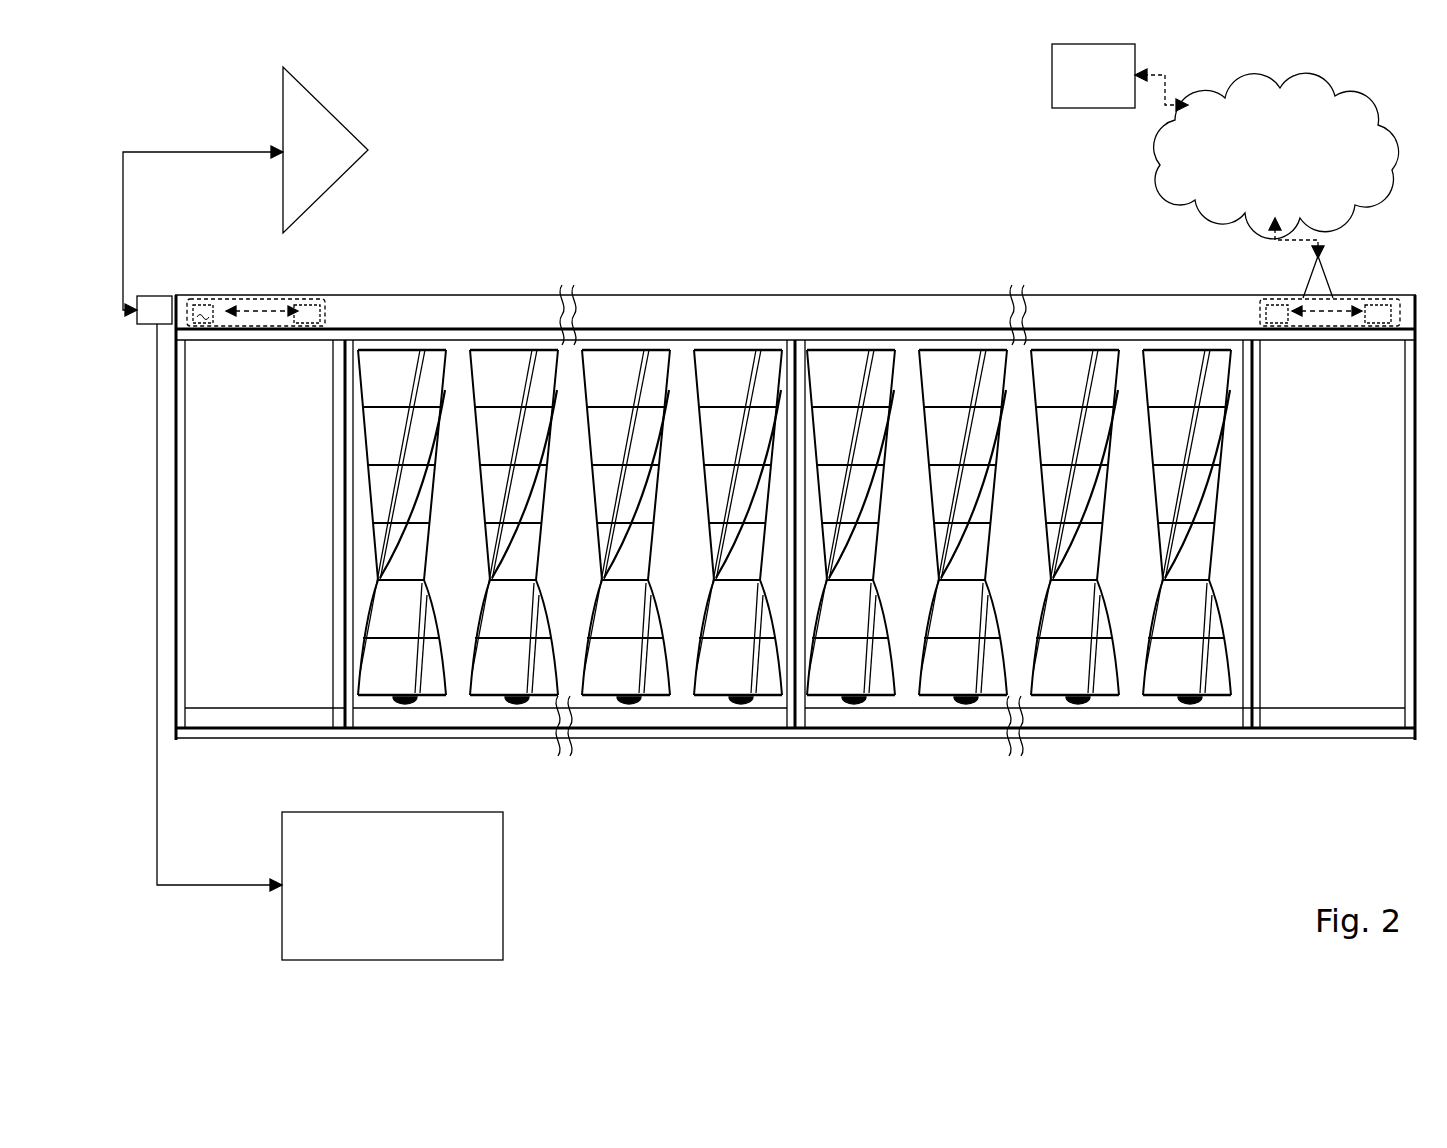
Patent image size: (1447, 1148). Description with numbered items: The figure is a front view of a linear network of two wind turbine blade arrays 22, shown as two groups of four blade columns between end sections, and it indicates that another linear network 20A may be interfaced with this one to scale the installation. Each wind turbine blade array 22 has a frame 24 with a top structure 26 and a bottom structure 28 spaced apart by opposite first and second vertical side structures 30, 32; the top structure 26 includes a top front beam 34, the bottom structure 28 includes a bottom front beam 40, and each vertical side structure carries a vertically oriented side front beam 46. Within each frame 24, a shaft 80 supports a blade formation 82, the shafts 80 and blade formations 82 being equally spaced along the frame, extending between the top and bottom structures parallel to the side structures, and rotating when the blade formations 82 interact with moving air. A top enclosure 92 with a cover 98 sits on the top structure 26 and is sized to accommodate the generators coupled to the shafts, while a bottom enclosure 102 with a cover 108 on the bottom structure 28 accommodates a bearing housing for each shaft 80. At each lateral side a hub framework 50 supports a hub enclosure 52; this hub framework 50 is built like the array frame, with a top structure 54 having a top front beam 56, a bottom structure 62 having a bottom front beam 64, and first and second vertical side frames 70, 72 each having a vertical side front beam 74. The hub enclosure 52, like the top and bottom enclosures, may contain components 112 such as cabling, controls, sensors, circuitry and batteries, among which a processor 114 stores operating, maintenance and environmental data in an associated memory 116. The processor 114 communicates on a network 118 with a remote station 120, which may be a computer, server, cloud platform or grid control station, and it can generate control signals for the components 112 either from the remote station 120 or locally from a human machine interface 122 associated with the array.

The linear network 20A is at (330, 642).
The wind turbine blade array 22 is at (794, 432).
The frame 24 is at (794, 432).
The top structure 26 is at (794, 432).
The top front beam 34 is at (943, 330).
The bottom structure 28 is at (795, 785).
The bottom front beam 40 is at (528, 740).
The first vertical side structure 30 is at (348, 567).
The second vertical side structure 32 is at (783, 567).
The side front beam 46 is at (796, 571).
The hub framework 50 is at (795, 402).
The top structure 54 is at (795, 402).
The top front beam 56 is at (262, 345).
The hub enclosure 52 is at (257, 296).
The bottom structure 62 is at (795, 780).
The bottom front beam 64 is at (250, 740).
The first vertical side frame 70 is at (185, 567).
The second vertical side frame 72 is at (334, 567).
The vertical side front beam 74 is at (795, 549).
The shaft 80 is at (628, 700).
The blade formation 82 is at (576, 697).
The top enclosure 92 is at (795, 261).
The cover 98 is at (905, 318).
The bottom enclosure 102 is at (795, 797).
The cover 108 is at (697, 722).
The components 112 is at (195, 302).
The processor 114 is at (305, 300).
The memory 116 is at (200, 300).
The network 118 is at (1276, 185).
The remote station 120 is at (1120, 77).
The human machine interface 122 is at (245, 195).